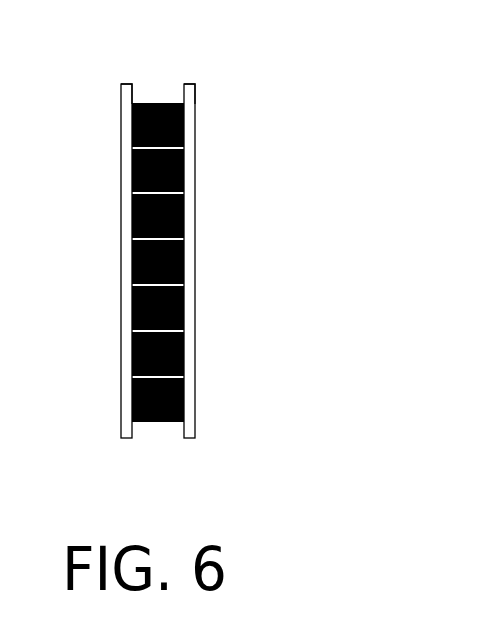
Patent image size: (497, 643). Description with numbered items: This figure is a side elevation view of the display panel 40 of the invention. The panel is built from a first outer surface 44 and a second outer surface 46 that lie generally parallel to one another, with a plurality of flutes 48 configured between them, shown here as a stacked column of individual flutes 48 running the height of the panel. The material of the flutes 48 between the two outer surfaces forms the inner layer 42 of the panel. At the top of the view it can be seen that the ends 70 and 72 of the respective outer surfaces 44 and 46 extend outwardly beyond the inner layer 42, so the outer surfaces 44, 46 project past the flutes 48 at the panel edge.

The electrode assembly 40 is at (186, 237).
The inner layer 42 is at (190, 229).
The first outer surface 44 is at (121, 149).
The second outer surface 46 is at (184, 116).
The flutes 48 is at (184, 175).
The end 70 is at (131, 83).
The end 72 is at (188, 84).